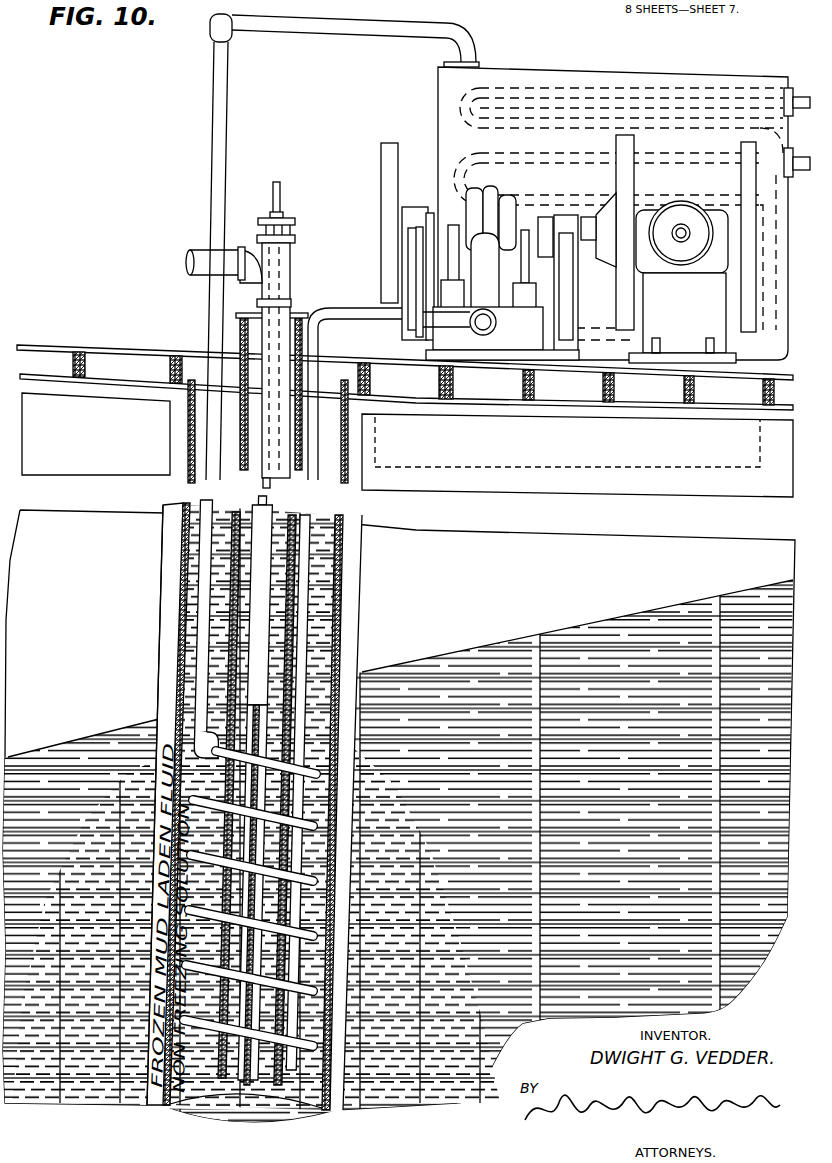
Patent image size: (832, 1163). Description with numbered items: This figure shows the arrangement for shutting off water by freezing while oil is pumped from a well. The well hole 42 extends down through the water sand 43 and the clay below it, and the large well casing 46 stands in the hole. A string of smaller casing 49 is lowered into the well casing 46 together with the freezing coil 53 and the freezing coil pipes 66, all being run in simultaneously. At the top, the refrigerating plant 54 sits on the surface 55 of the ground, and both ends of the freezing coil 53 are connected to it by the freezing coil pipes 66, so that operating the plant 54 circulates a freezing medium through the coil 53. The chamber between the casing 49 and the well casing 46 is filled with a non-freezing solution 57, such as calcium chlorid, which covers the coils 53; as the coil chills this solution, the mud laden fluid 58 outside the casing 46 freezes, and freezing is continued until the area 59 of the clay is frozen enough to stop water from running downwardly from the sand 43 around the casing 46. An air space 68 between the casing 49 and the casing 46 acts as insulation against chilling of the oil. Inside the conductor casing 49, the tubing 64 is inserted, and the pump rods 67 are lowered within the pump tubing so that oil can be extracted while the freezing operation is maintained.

The well hole 42 is at (353, 415).
The water sand 43 is at (646, 542).
The 12 inch well casing 46 is at (333, 1108).
The string of 4½ inch casing 49 is at (293, 677).
The freezing coil 53 is at (215, 1058).
The refrigerating plant 54 is at (566, 72).
The surface of the ground 55 is at (606, 420).
The non-freezing solution 57 is at (320, 747).
The mud laden fluid 58 is at (353, 692).
The frozen area of the clay 59 is at (410, 843).
The 3 inch tubing 64 is at (247, 728).
The freezing coil pipes 66 is at (222, 168).
The rods 67 is at (267, 487).
The air space 68 is at (352, 710).